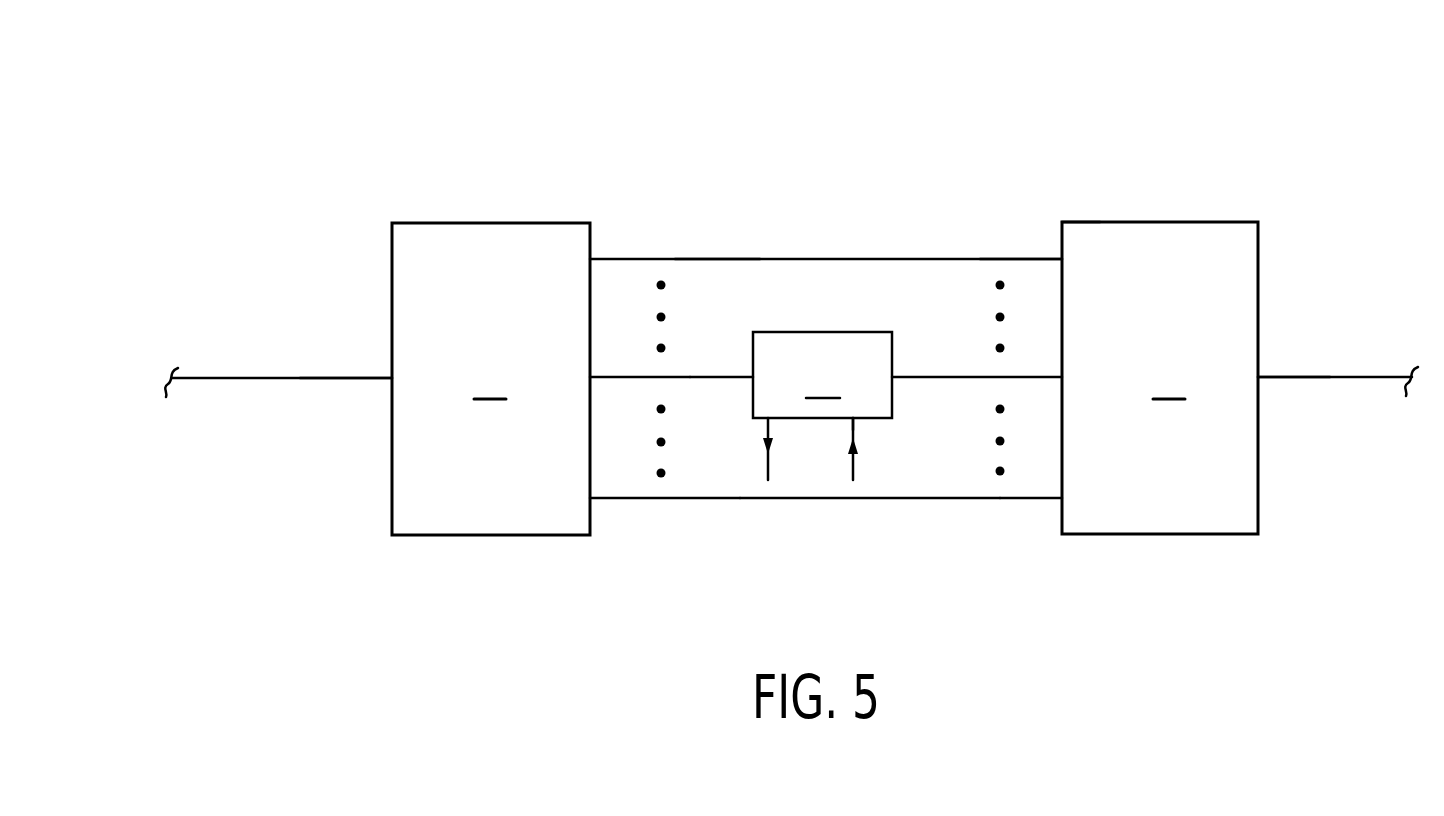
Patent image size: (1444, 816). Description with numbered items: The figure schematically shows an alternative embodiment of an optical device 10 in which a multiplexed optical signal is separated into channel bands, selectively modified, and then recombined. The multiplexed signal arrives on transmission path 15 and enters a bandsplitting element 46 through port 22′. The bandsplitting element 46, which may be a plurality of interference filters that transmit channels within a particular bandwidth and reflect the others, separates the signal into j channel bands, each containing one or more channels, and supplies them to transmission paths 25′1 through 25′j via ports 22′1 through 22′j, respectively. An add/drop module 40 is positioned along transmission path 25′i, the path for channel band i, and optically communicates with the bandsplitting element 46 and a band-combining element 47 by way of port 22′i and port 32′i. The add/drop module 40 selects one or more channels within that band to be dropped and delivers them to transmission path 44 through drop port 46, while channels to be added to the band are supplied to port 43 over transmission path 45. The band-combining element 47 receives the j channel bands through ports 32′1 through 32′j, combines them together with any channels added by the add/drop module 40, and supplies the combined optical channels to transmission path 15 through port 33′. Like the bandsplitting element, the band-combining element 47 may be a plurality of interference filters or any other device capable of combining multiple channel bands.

The optical device 10 is at (1088, 136).
The transmission path 15 is at (214, 378).
The port 22′ is at (392, 380).
The port 22′1 is at (592, 258).
The port 22′i is at (592, 377).
The port 22′j is at (592, 500).
The transmission path 25′1 is at (675, 258).
The transmission path 25′i is at (692, 377).
The transmission path 25′j is at (750, 500).
The port 32′1 is at (1062, 258).
The port 32′i is at (1062, 377).
The port 32′j is at (1062, 500).
The port 33′ is at (1260, 380).
The add/drop module 40 is at (822, 375).
The port 43 is at (853, 420).
The transmission path 44 is at (768, 472).
The transmission path 45 is at (853, 473).
The bandsplitting element 46 is at (768, 420).
The band-combining element 47 is at (1160, 378).